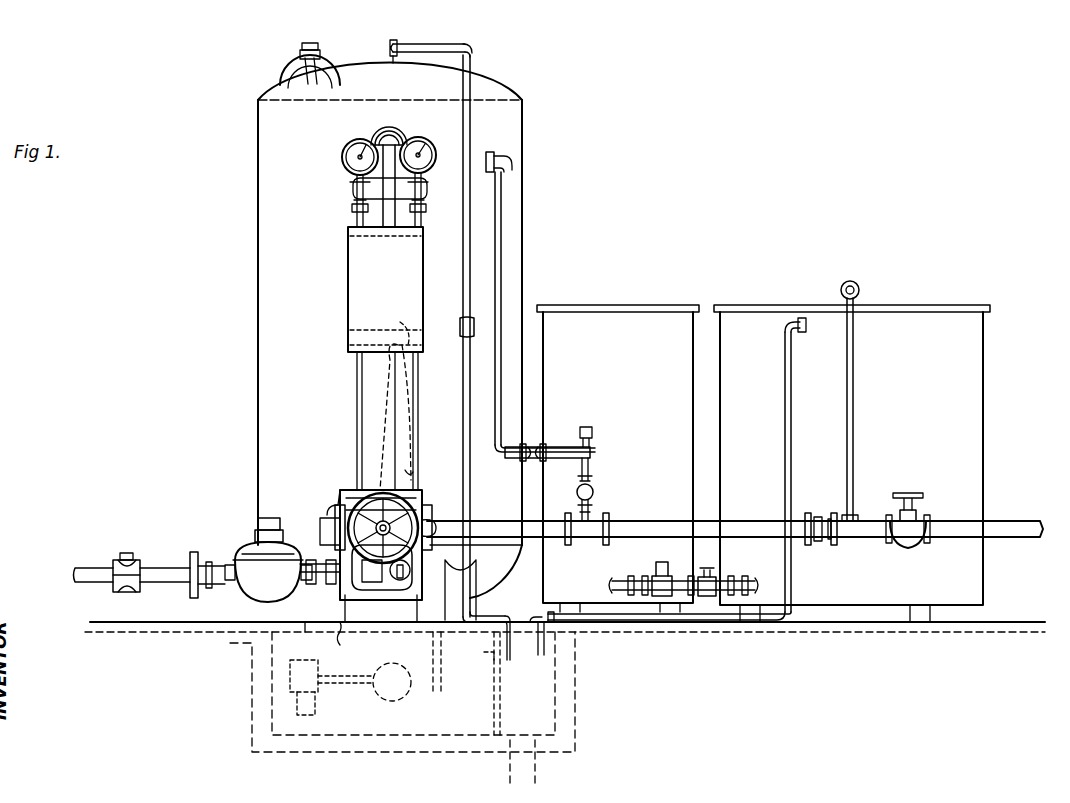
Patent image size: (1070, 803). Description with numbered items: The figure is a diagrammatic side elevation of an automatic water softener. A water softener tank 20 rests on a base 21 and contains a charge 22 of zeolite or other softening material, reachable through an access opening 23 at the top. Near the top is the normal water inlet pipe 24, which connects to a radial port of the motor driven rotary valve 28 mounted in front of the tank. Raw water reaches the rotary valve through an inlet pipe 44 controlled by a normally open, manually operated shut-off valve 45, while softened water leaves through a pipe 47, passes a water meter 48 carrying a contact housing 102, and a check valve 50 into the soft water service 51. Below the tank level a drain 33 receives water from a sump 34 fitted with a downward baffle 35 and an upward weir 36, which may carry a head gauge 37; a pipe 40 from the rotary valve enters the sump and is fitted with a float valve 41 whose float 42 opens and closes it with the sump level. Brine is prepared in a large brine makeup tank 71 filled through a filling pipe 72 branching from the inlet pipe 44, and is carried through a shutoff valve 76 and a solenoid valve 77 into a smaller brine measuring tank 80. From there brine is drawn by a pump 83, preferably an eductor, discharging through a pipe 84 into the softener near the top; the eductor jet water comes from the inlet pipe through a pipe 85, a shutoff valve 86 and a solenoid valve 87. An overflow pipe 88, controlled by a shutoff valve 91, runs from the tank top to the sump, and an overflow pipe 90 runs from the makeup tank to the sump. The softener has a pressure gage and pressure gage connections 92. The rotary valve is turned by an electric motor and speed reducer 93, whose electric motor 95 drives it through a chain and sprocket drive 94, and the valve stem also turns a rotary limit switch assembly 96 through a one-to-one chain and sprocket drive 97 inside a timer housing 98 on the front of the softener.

The water softener tank 20 is at (507, 128).
The base 21 is at (478, 590).
The charge of zeolite 22 is at (285, 292).
The access opening 23 is at (297, 60).
The normal water inlet pipe 24 is at (385, 120).
The motor driven rotary valve 28 is at (385, 550).
The drain 33 is at (512, 748).
The sump 34 is at (418, 653).
The baffle 35 is at (443, 682).
The weir 36 is at (500, 690).
The head gauge 37 is at (490, 660).
The pipe 40 is at (300, 605).
The float valve 41 is at (333, 684).
The float 42 is at (388, 700).
The inlet pipe 44 is at (749, 523).
The shut-off valve 45 is at (906, 542).
The pipe 47 is at (212, 565).
The water meter 48 is at (282, 590).
The check valve 50 is at (135, 560).
The soft water service 51 is at (96, 568).
The brine makeup tank 71 is at (925, 413).
The filling pipe 72 is at (853, 362).
The shutoff valve 76 is at (712, 580).
The solenoid valve 77 is at (658, 562).
The brine measuring tank 80 is at (636, 350).
The pump 83 is at (535, 450).
The pipe 84 is at (503, 196).
The pipe 85 is at (592, 510).
The shutoff valve 86 is at (594, 488).
The solenoid valve 87 is at (592, 433).
The overflow pipe 88 is at (437, 47).
The overflow pipe 90 is at (786, 405).
The shutoff valve 91 is at (462, 327).
The pressure gage and pressure gage connections 92 is at (428, 140).
The electric motor and speed reducer 93 is at (432, 522).
The chain and sprocket drive 94 is at (405, 517).
The electric motor 95 is at (340, 630).
The rotary limit switch assembly 96 is at (405, 320).
The chain and sprocket drive 97 is at (405, 470).
The timer housing 98 is at (402, 280).
The contact housing 102 is at (275, 518).